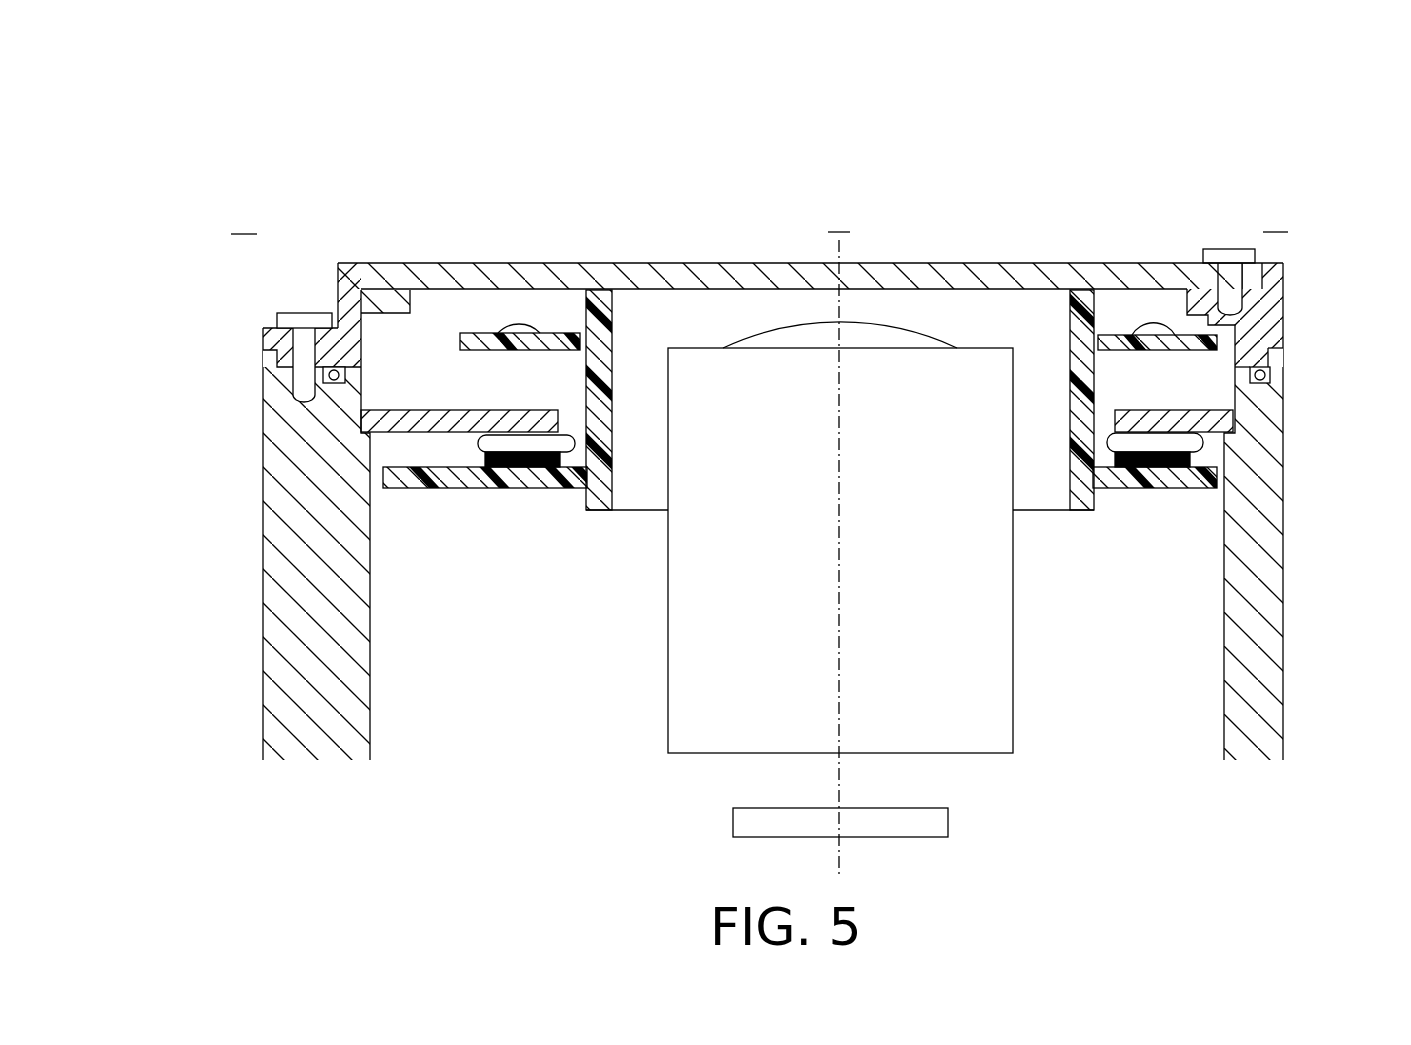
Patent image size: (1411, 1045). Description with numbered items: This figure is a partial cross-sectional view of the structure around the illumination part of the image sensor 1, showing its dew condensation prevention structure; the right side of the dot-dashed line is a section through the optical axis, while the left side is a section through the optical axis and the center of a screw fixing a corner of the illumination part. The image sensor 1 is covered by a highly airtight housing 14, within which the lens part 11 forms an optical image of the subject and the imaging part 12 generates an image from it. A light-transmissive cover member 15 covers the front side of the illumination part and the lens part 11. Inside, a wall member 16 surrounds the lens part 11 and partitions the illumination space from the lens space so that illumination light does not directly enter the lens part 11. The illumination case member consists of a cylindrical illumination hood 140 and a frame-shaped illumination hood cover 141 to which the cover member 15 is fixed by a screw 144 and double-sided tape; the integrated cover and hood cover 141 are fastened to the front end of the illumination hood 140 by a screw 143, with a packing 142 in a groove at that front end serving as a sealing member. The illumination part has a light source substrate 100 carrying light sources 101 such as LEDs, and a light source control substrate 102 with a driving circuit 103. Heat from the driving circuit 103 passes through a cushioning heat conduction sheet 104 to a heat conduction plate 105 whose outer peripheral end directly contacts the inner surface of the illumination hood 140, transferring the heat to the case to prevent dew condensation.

The image sensor 1 is at (488, 118).
The lens part 11 is at (668, 677).
The imaging part 12 is at (733, 828).
The housing 14 is at (268, 622).
The cover member 15 is at (945, 263).
The wall member 16 is at (583, 510).
The light source substrate 100 is at (470, 333).
The light source 101 is at (515, 325).
The light source control substrate 102 is at (527, 485).
The driving circuit 103 is at (478, 455).
The heat conduction sheet 104 is at (570, 435).
The heat conduction plate 105 is at (442, 410).
The illumination hood 140 is at (270, 402).
The illumination hood cover 141 is at (270, 340).
The packing 142 is at (323, 373).
The screw 143 is at (302, 313).
The screw 144 is at (1230, 249).